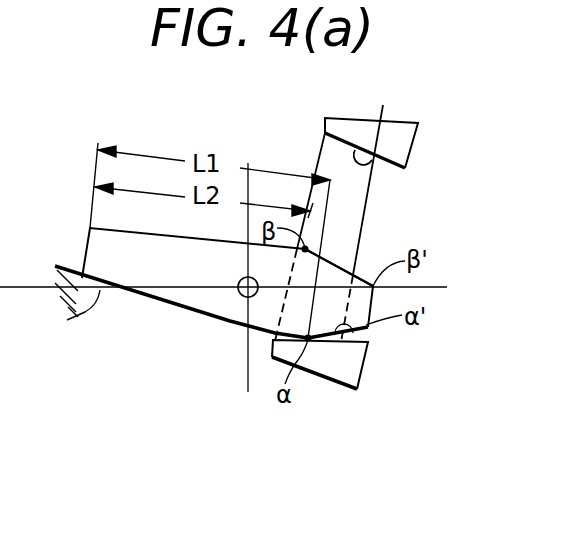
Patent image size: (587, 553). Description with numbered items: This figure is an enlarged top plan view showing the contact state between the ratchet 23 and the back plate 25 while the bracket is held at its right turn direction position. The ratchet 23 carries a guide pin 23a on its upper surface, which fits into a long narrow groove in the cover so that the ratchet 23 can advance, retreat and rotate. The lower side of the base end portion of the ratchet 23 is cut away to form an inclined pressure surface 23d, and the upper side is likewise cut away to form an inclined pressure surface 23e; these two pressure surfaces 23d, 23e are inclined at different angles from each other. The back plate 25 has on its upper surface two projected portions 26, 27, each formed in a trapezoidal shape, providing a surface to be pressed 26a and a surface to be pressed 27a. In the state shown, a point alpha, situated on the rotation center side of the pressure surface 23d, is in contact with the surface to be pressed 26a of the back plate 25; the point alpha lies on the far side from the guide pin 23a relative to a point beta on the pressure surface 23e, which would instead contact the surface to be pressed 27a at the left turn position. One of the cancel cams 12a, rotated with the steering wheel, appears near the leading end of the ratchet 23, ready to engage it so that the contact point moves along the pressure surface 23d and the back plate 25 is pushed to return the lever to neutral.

The ratchet 23 is at (157, 300).
The guide pin 23a is at (241, 295).
The pressure surface 23e is at (337, 261).
The pressure surface 23d is at (368, 332).
The back plate 25 is at (313, 152).
The projected portion 26 is at (347, 389).
The surface to be pressed 26a is at (331, 340).
The projected portion 27 is at (340, 116).
The surface to be pressed 27a is at (375, 152).
The cancel cam 12a is at (87, 315).